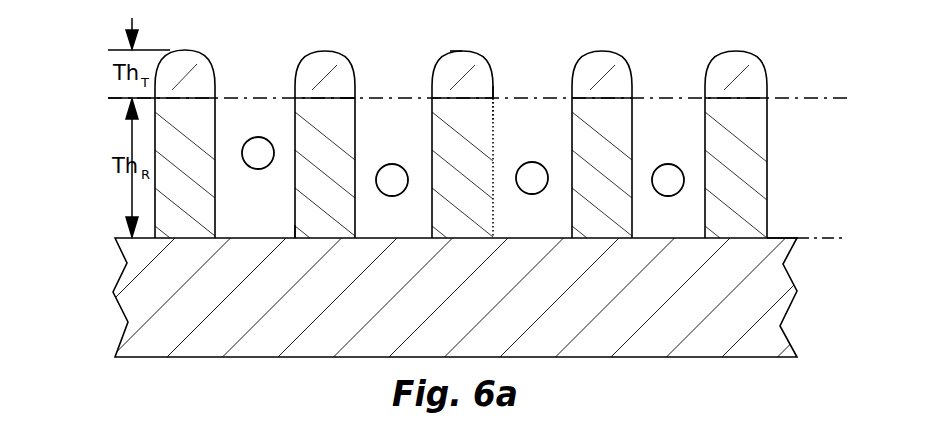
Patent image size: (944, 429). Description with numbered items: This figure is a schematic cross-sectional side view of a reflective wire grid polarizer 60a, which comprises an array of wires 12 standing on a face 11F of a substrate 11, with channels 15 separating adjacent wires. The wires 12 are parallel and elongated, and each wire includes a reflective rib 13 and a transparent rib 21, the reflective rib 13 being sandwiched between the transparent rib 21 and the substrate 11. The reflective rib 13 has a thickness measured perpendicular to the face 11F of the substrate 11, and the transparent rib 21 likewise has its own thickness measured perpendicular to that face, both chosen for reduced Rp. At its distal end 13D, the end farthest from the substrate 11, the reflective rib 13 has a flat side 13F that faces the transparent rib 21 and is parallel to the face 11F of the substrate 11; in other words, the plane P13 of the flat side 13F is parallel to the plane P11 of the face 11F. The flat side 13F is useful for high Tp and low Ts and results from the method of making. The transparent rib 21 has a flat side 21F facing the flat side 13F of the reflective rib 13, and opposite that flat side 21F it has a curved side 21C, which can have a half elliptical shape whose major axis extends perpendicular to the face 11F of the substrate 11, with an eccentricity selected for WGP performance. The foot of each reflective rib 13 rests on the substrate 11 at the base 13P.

The substrate 11 is at (478, 316).
The face of the substrate 11F is at (780, 236).
The array of wires 12 is at (90, 136).
The reflective rib 13 is at (748, 193).
The distal end of the reflective rib 13D is at (348, 99).
The flat side of the reflective rib 13F is at (466, 100).
The pillar foot 13P is at (302, 237).
The channels 15 is at (463, 166).
The transparent rib 21 is at (748, 91).
The curved side of the transparent rib 21C is at (456, 51).
The flat side of the transparent rib 21F is at (480, 98).
The reflective WGP 60a is at (82, 332).
The plane of the face of the substrate P11 is at (841, 242).
The plane of the flat side of the reflective rib P13 is at (496, 101).